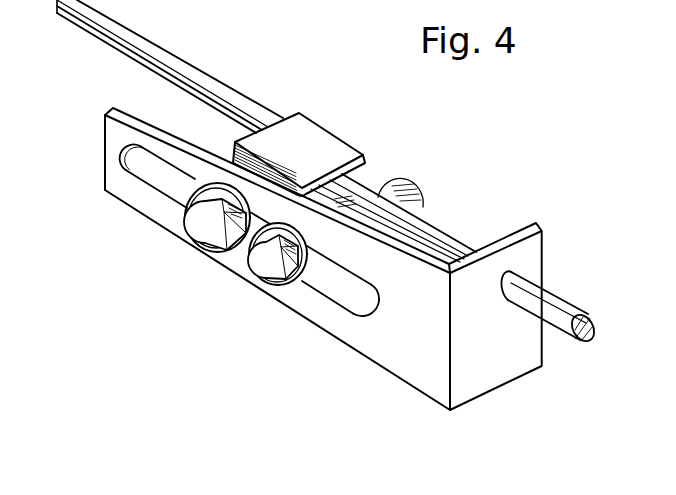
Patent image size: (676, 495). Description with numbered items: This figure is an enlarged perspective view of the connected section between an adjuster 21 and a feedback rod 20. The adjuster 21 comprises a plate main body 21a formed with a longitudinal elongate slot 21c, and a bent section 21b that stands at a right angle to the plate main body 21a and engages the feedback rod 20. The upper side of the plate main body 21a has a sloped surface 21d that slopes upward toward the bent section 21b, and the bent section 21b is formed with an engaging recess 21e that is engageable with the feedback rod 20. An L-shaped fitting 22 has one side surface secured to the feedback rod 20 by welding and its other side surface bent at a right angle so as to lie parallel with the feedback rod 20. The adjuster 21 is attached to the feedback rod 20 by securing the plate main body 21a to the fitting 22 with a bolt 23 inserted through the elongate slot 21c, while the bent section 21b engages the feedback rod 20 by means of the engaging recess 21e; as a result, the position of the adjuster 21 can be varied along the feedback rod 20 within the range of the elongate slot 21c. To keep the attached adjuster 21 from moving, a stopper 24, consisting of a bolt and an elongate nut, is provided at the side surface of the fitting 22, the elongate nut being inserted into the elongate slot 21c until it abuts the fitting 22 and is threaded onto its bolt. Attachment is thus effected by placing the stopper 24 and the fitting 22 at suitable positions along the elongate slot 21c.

The feedback rod 20 is at (207, 82).
The adjuster 21 is at (213, 353).
The plate main body 21a is at (408, 358).
The bent section 21b is at (530, 370).
The elongate slot 21c is at (338, 292).
The sloped surface 21d is at (388, 241).
The engaging recess 21e is at (538, 265).
The L-shaped fitting 22 is at (316, 125).
The bolt 23 is at (207, 232).
The stopper 24 is at (268, 270).